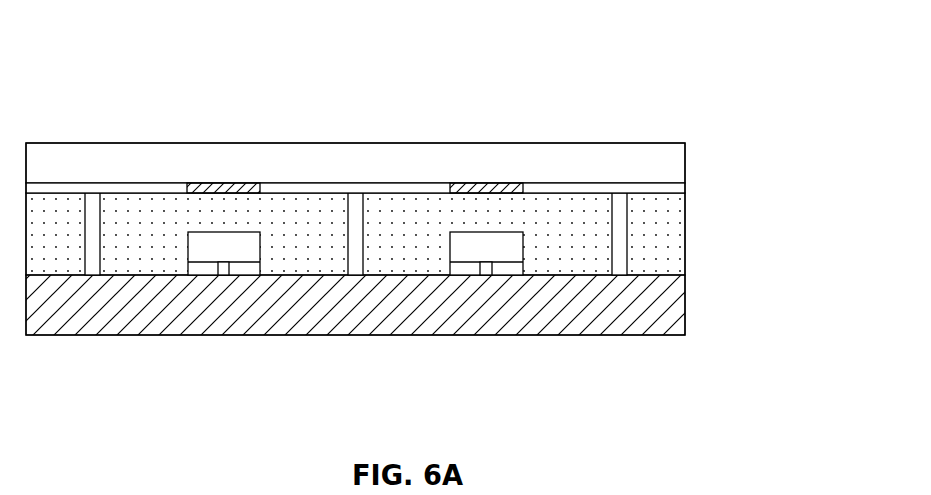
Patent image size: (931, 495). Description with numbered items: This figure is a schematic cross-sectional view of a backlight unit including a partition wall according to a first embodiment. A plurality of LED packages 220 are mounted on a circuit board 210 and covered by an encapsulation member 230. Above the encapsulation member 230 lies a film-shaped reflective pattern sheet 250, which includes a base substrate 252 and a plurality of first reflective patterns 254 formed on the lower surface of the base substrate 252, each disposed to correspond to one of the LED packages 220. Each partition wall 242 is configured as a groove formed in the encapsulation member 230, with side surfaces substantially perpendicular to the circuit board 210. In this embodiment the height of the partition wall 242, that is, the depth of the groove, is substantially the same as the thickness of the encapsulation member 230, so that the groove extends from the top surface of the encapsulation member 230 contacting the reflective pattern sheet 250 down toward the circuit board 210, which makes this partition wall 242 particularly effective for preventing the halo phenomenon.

The circuit board 210 is at (667, 313).
The LED package 220 is at (512, 250).
The encapsulation member 230 is at (667, 243).
The partition wall 242 is at (620, 210).
The reflective pattern sheet 250 is at (355, 113).
The base substrate 252 is at (411, 160).
The first reflective pattern 254 is at (472, 177).